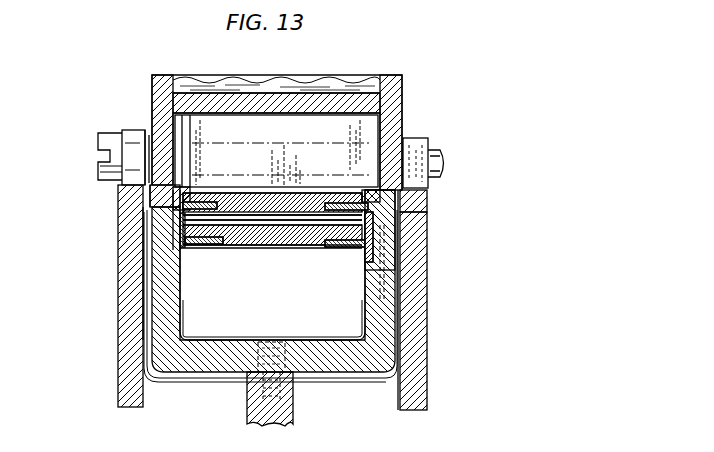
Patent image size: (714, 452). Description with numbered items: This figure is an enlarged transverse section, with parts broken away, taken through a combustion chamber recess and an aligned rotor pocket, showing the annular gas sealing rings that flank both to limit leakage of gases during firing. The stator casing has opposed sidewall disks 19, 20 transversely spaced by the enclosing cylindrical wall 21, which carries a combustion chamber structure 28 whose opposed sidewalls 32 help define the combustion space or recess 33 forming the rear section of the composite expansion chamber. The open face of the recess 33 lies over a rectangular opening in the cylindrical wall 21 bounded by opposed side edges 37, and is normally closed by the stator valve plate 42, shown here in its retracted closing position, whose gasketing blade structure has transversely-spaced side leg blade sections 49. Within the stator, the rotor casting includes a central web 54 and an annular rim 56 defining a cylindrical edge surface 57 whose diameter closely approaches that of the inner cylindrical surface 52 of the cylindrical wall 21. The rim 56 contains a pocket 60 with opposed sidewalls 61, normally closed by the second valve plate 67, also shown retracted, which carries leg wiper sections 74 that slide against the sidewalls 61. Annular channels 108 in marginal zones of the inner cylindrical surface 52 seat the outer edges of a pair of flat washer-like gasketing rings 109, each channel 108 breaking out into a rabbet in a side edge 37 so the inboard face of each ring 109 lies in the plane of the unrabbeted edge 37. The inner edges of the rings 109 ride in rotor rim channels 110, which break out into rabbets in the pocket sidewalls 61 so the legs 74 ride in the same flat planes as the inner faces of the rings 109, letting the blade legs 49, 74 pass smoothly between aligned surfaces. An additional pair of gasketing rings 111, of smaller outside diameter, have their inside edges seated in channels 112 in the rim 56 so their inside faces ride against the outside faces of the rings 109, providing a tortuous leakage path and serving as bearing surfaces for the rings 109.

The sidewall disk 19 is at (140, 318).
The sidewall disk 20 is at (427, 346).
The cylindrical wall 21 is at (412, 195).
The combustion chamber structure 28 is at (404, 128).
The sidewalls 32 is at (150, 112).
The combustion space or recess 33 is at (282, 139).
The side edges 37 is at (204, 200).
The valve plate 42 is at (245, 196).
The leg blade sections 49 is at (207, 195).
The inner cylindrical surface 52 is at (392, 230).
The central web 54 is at (293, 408).
The annular rim 56 is at (410, 272).
The cylindrical edge surface 57 is at (383, 240).
The pocket 60 is at (337, 320).
The sidewalls 61 is at (185, 295).
The second valve plate 67 is at (242, 248).
The leg wiper sections 74 is at (198, 246).
The annular channels 108 is at (182, 205).
The gasketing rings 109 is at (182, 213).
The rotor rim channels 110 is at (178, 249).
The gasketing rings 111 is at (180, 228).
The channels 112 is at (180, 243).